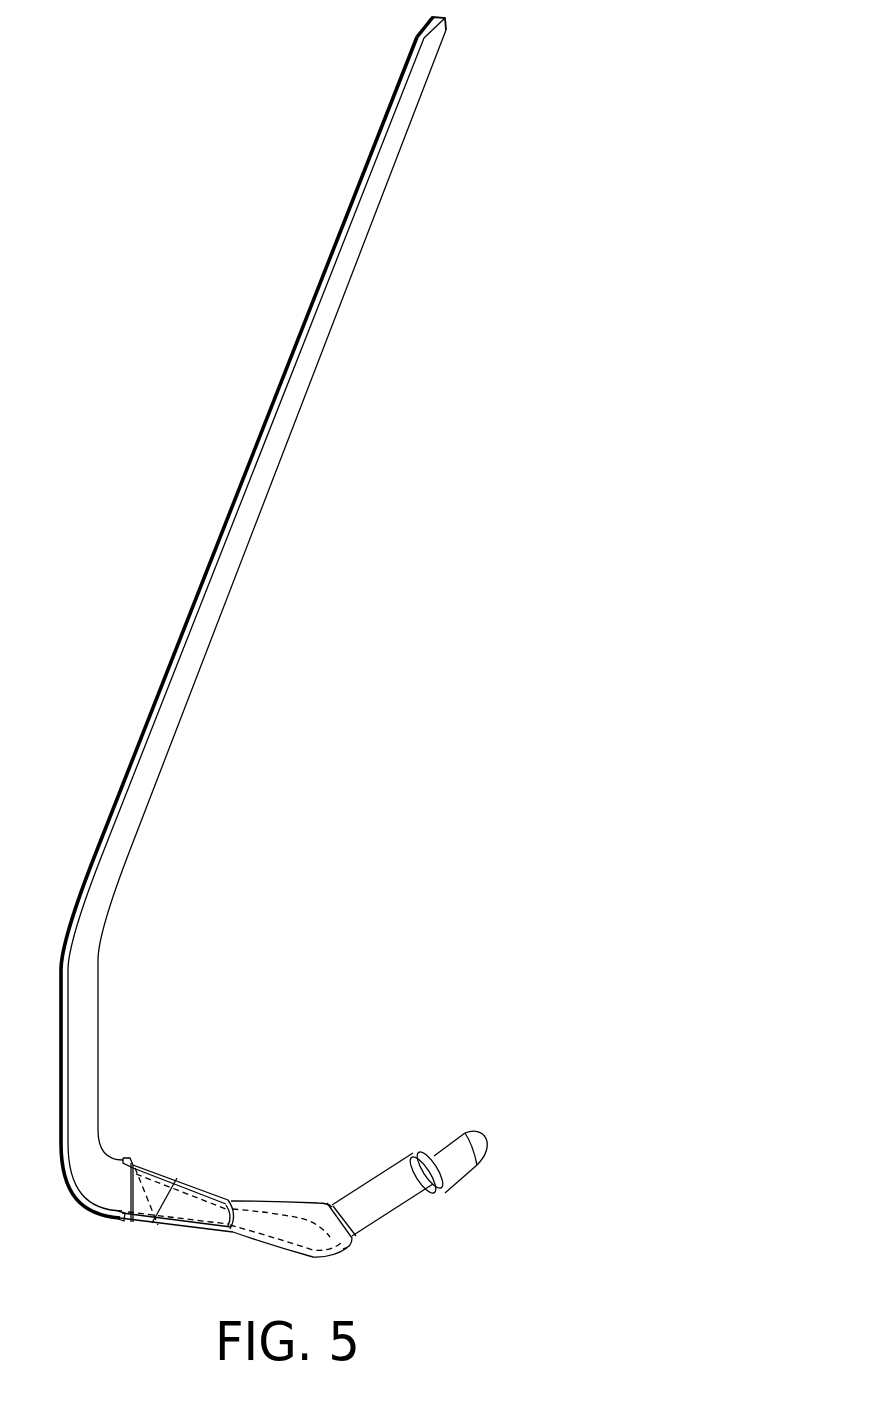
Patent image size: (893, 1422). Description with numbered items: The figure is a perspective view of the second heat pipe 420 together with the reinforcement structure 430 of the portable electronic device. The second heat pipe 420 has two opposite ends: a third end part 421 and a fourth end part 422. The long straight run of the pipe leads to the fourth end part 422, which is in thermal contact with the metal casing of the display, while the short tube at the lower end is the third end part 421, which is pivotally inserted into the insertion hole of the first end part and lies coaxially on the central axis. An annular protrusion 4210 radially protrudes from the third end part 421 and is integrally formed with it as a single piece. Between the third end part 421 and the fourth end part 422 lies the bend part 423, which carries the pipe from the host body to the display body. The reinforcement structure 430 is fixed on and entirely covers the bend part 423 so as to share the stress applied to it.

The second heat pipe 420 is at (250, 518).
The fourth end part 422 is at (428, 59).
The third end part 421 is at (457, 1143).
The annular protrusion 4210 is at (422, 1152).
The bend part 423 is at (184, 1216).
The reinforcement structure 430 is at (190, 1193).